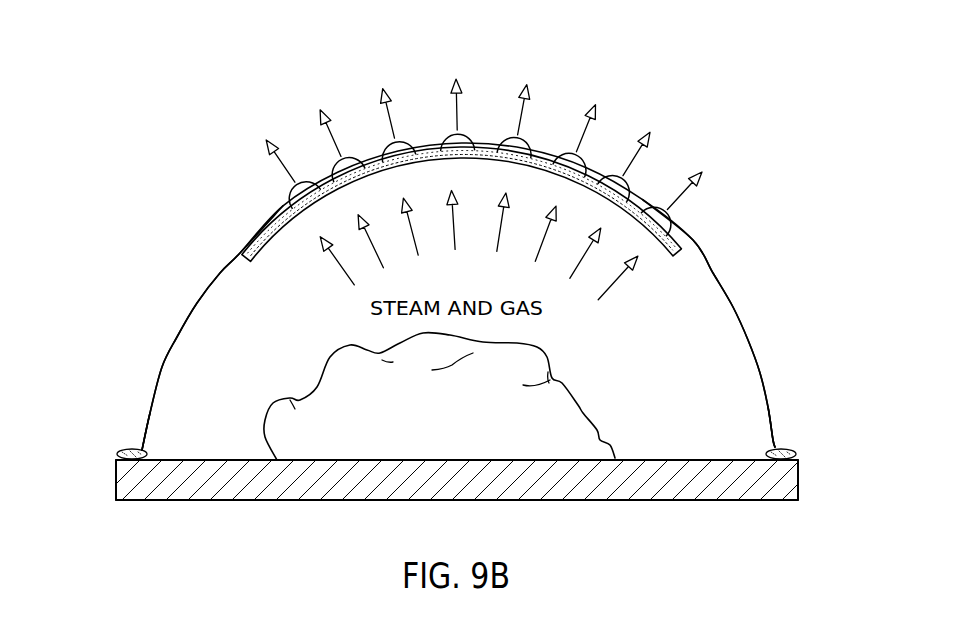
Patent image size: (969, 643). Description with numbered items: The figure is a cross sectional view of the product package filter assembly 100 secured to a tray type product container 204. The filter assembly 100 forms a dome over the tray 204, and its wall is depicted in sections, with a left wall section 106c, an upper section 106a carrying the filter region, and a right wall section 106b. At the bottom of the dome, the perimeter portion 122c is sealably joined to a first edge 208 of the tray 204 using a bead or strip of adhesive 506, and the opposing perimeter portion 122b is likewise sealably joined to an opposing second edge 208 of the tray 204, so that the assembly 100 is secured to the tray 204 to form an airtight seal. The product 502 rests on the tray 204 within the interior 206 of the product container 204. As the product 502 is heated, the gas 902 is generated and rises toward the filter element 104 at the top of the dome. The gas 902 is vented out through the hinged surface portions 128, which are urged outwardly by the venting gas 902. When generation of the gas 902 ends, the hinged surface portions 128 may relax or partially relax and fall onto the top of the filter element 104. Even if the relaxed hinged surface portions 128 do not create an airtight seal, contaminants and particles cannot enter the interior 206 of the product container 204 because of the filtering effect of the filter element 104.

The product package filter assembly 100 is at (262, 86).
The filter element 104 is at (668, 247).
The upper wall section 106a is at (266, 232).
The right wall section 106b is at (728, 297).
The left wall section 106c is at (178, 335).
The opposing perimeter portion 122b is at (774, 447).
The perimeter portion 122c is at (140, 448).
The hinged surface portions 128 is at (686, 221).
The tray type product container 204 is at (356, 503).
The interior 206 is at (718, 386).
The edge of the tray 208 is at (115, 480).
The product 502 is at (290, 398).
The bead or strip of adhesive 506 is at (117, 452).
The gas 902 is at (325, 269).